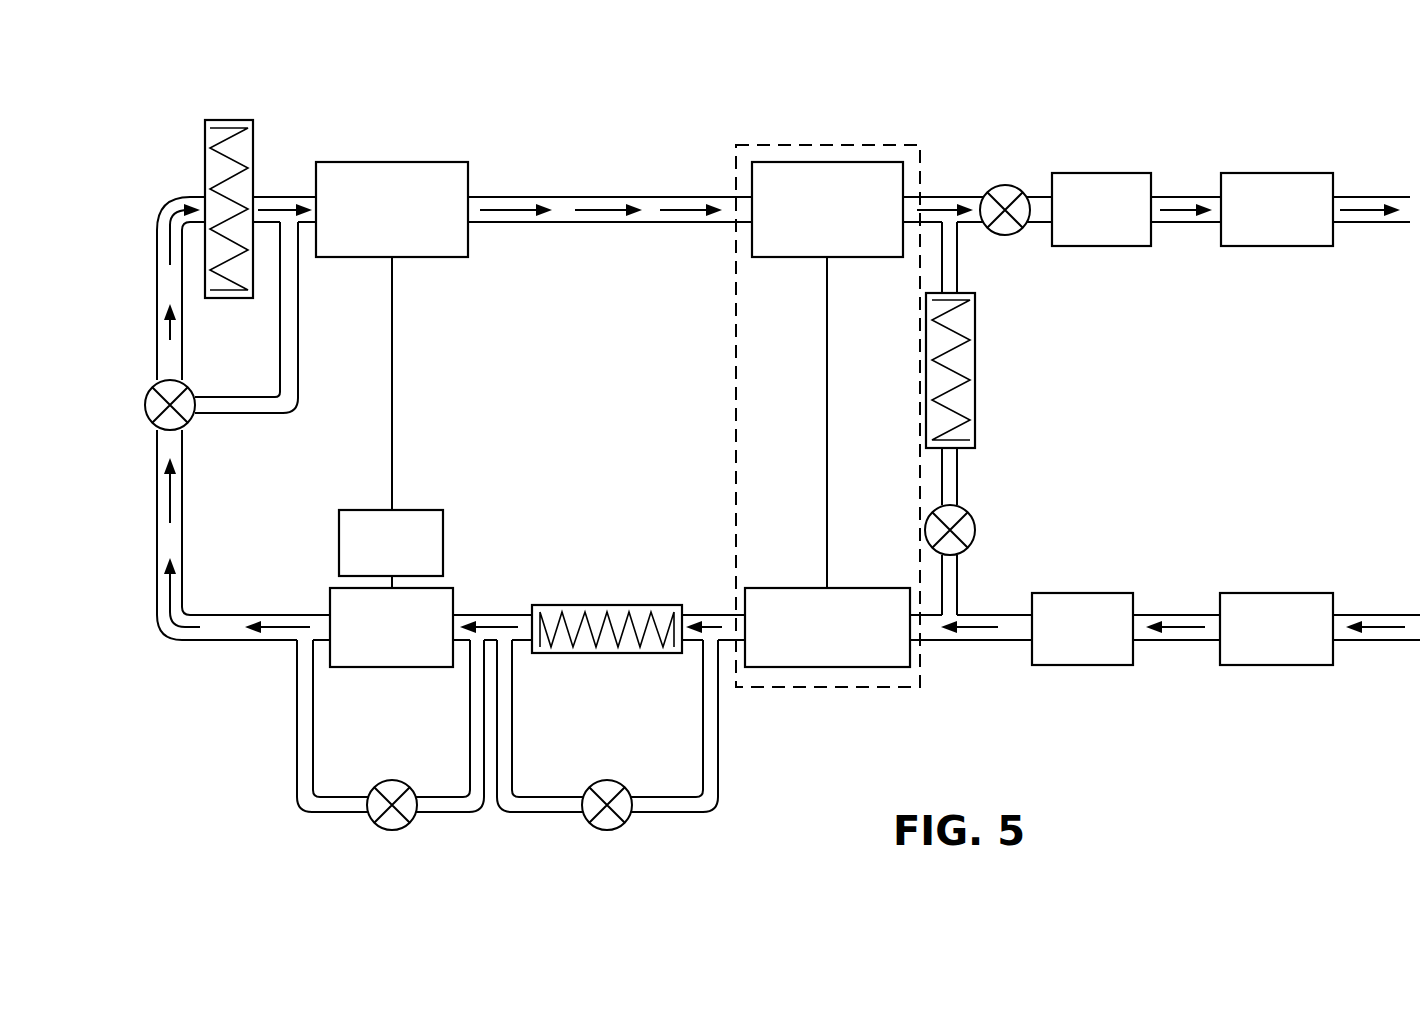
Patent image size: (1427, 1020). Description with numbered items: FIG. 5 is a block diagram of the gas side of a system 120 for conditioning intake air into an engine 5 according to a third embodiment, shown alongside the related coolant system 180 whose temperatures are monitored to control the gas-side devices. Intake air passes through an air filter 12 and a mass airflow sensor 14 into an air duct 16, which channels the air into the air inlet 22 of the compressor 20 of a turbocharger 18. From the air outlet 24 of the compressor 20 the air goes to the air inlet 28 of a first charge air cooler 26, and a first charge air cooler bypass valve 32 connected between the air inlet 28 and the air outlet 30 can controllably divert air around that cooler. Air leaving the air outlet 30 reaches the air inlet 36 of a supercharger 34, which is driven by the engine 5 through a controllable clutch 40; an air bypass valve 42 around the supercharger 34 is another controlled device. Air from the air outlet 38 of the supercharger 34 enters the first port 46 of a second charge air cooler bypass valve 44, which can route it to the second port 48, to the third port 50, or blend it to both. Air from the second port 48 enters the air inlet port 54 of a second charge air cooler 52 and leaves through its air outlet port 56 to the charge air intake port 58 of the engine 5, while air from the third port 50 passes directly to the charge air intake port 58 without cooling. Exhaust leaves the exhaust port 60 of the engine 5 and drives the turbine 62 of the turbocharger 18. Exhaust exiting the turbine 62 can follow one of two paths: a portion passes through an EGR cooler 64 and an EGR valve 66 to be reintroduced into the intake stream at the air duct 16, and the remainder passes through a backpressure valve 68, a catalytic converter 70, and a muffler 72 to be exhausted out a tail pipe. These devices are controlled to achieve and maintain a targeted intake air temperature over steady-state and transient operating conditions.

The engine 5 is at (395, 162).
The air filter 12 is at (1302, 665).
The mass airflow sensor 14 is at (1112, 665).
The air duct 16 is at (1002, 642).
The turbocharger 18 is at (920, 163).
The compressor 20 is at (843, 667).
The air inlet 22 is at (912, 645).
The air outlet 24 is at (745, 613).
The first charge air cooler 26 is at (600, 605).
The air inlet 28 is at (690, 605).
The air outlet 30 is at (532, 605).
The first charge air cooler bypass valve 32 is at (628, 823).
The supercharger 34 is at (385, 667).
The air inlet 36 is at (453, 600).
The air outlet 38 is at (330, 600).
The controllable clutch 40 is at (425, 510).
The air bypass valve 42 is at (413, 817).
The second charge air cooler bypass valve 44 is at (148, 398).
The first port 46 is at (158, 430).
The second port 48 is at (183, 380).
The third port 50 is at (195, 415).
The second charge air cooler 52 is at (205, 143).
The air inlet port 54 is at (205, 197).
The air outlet port 56 is at (253, 197).
The charge air intake port 58 is at (316, 197).
The exhaust port 60 is at (467, 197).
The turbine 62 is at (790, 162).
The EGR cooler 64 is at (975, 392).
The EGR valve 66 is at (975, 537).
The backpressure valve 68 is at (1017, 233).
The catalytic converter 70 is at (1137, 247).
The muffler 72 is at (1297, 247).
The system 120 is at (660, 72).
The coolant system 180 is at (698, 124).